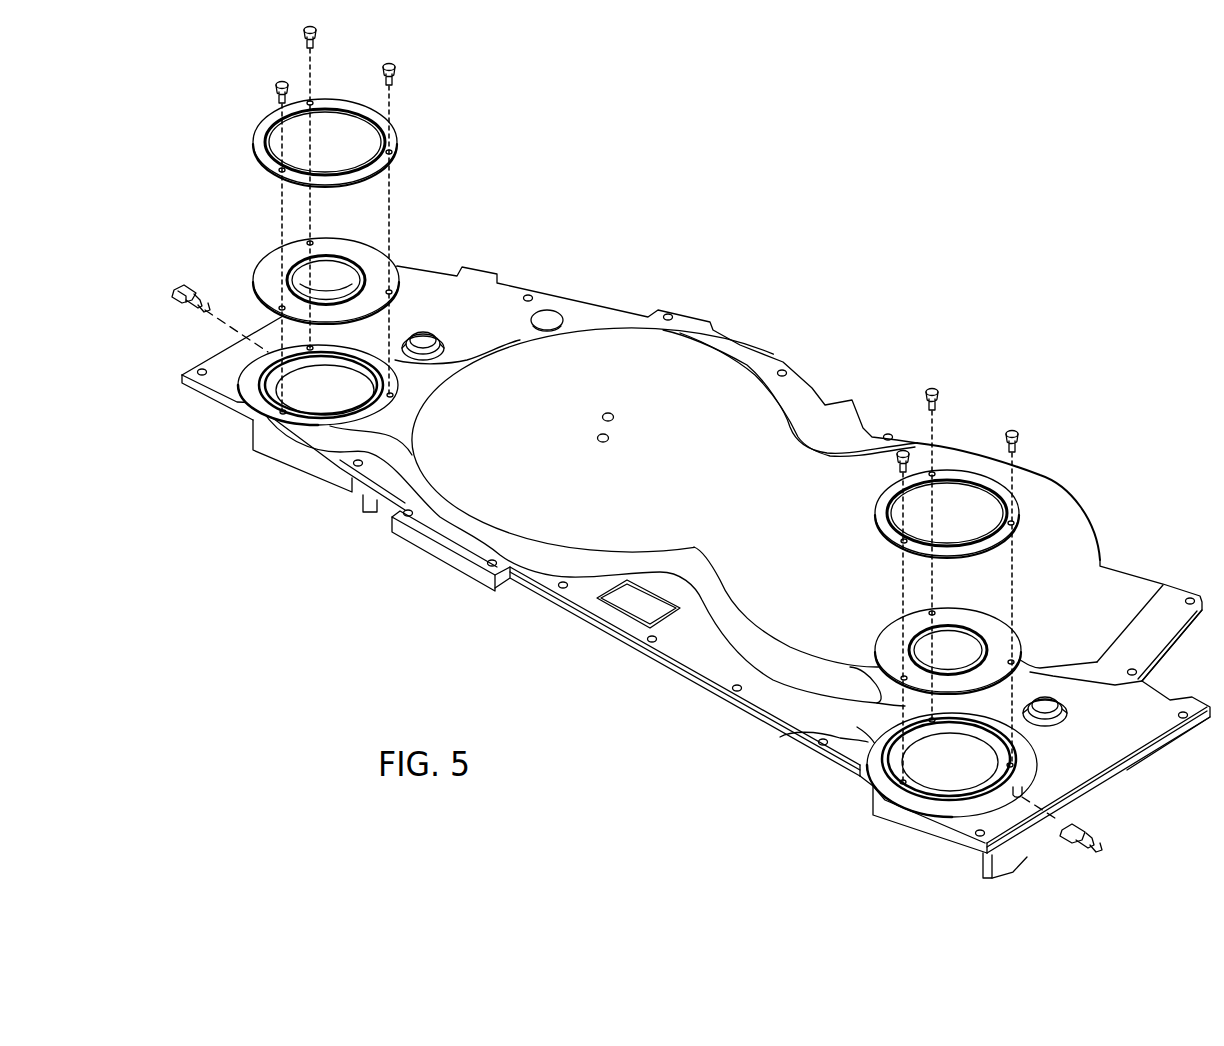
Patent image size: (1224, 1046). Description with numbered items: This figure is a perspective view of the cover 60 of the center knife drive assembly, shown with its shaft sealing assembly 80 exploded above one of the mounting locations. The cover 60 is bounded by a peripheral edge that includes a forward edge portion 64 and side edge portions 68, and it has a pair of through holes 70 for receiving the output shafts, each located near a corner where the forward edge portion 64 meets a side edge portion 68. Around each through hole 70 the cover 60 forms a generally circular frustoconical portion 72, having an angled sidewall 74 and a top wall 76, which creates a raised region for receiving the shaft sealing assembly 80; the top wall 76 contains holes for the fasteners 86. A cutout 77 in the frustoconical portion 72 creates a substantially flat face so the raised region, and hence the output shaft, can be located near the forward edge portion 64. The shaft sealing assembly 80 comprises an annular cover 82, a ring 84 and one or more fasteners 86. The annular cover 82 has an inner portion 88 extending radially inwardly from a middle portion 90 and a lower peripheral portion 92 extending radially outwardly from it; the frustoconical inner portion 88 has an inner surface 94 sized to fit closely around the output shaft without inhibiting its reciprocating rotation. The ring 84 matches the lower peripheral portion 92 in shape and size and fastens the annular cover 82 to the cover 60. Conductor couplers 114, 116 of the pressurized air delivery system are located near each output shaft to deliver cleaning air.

The cover 60 is at (599, 279).
The forward edge portion 64 is at (525, 596).
The side edge portions 68 is at (1127, 770).
The through hole 70 is at (327, 394).
The frustoconical portion 72 is at (872, 738).
The angled sidewall 74 is at (767, 715).
The top wall 76 is at (885, 797).
The cutout 77 is at (897, 795).
The shaft sealing assembly 80 is at (247, 107).
The annular cover 82 is at (385, 251).
The ring 84 is at (399, 129).
The fasteners 86 is at (302, 42).
The inner portion 88 is at (289, 281).
The middle portion 90 is at (325, 258).
The lower peripheral portion 92 is at (397, 266).
The inner surface 94 is at (317, 293).
The conductor coupler 114 is at (172, 302).
The conductor coupler 116 is at (1063, 823).